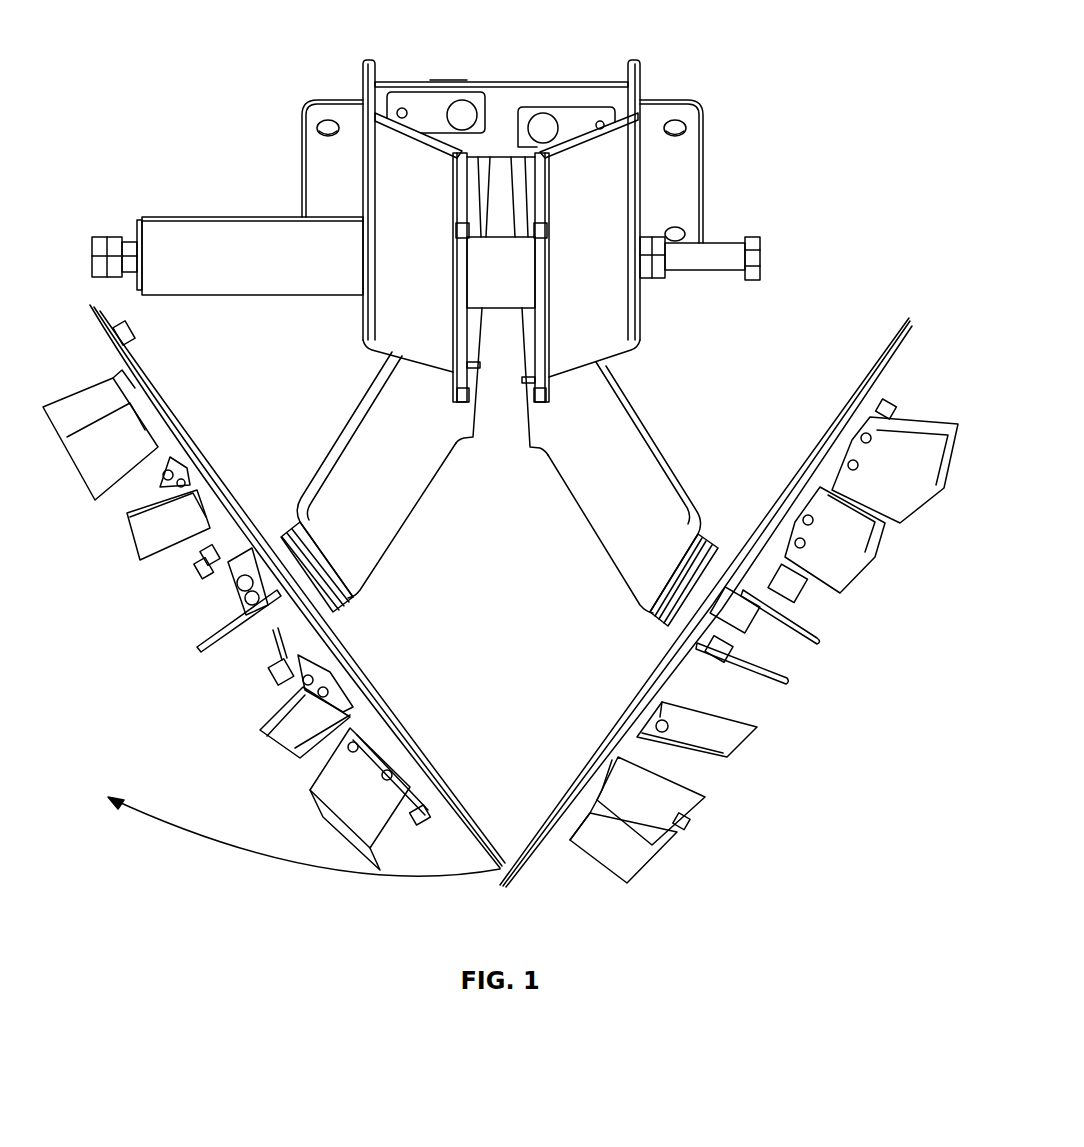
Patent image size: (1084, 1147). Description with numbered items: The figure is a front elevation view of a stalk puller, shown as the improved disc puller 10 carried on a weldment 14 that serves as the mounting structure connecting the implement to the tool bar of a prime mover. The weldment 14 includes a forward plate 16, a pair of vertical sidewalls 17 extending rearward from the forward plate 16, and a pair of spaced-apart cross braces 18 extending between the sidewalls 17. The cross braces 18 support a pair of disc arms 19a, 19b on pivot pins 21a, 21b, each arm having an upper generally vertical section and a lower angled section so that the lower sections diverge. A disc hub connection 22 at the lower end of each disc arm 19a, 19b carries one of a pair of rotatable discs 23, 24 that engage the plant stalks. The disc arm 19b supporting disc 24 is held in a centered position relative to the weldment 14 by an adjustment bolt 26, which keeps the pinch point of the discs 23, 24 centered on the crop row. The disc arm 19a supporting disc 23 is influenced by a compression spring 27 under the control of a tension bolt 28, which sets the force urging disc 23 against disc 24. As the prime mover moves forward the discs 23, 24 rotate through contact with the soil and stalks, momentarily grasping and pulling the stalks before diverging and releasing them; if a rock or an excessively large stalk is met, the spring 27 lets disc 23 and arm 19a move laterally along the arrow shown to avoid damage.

The disc puller 10 is at (833, 671).
The weldment 14 is at (683, 78).
The forward plate 16 is at (684, 170).
The vertical sidewalls 17 is at (363, 72).
The cross braces 18 is at (510, 97).
The disc arm 19a is at (365, 452).
The disc arm 19b is at (628, 455).
The pivot pin 21a is at (462, 115).
The pivot pin 21b is at (543, 128).
The disc hub connection 22 is at (292, 535).
The rotatable disc 23 is at (390, 708).
The rotatable disc 24 is at (848, 405).
The adjustment bolt 26 is at (718, 250).
The compression spring 27 is at (228, 203).
The tension bolt 28 is at (98, 236).